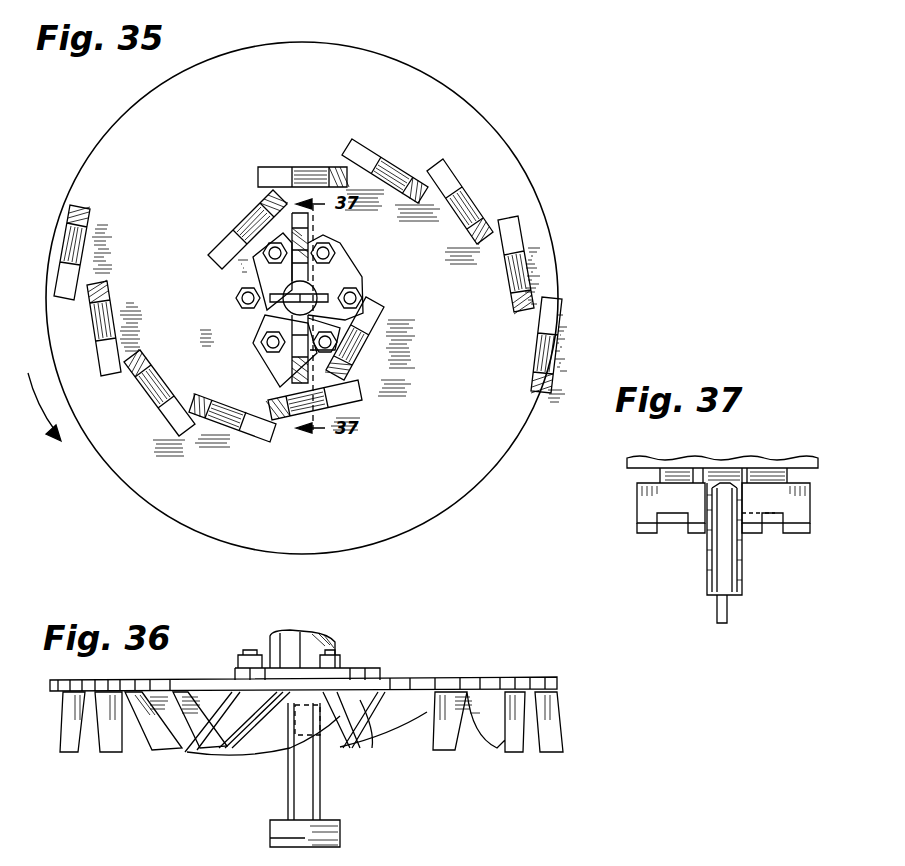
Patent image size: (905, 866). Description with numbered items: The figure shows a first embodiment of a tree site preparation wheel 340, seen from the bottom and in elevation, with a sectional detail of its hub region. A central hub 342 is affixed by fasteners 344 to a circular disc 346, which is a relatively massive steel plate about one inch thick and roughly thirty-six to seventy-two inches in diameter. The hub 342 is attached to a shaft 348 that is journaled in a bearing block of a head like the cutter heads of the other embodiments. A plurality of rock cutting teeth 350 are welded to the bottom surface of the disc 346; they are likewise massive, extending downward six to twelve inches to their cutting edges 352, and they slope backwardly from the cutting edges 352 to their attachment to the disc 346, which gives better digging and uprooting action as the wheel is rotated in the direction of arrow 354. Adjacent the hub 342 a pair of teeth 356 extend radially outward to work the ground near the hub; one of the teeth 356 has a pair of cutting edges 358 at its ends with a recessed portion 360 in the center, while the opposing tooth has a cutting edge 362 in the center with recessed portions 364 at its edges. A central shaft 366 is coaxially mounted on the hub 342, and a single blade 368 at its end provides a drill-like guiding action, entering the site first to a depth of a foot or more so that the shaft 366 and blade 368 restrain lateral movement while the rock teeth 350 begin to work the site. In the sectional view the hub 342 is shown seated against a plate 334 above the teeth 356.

In FIG. 37, the plate 334 is at (813, 458).
In FIG. 35, the site preparation wheel 340 is at (513, 112).
In FIG. 36, the site preparation wheel 340 is at (556, 686).
In FIG. 35, the central hub 342 is at (336, 272).
In FIG. 36, the central hub 342 is at (397, 687).
In FIG. 37, the central hub 342 is at (672, 472).
In FIG. 35, the fasteners 344 is at (262, 258).
In FIG. 36, the fasteners 344 is at (250, 655).
In FIG. 36, the circular disc 346 is at (500, 678).
In FIG. 36, the shaft 348 is at (330, 630).
In FIG. 35, the rock cutting teeth 350 is at (288, 166).
In FIG. 36, the rock cutting teeth 350 is at (68, 755).
In FIG. 36, the cutting edges 352 is at (445, 752).
In FIG. 35, the arrow (direction of rotation) 354 is at (45, 427).
In FIG. 35, the teeth 356 is at (316, 243).
In FIG. 36, the teeth 356 is at (295, 752).
In FIG. 37, the teeth 356 is at (657, 505).
In FIG. 37, the cutting edges 358 is at (642, 533).
In FIG. 37, the recessed portion 360 is at (665, 528).
In FIG. 37, the cutting edge 362 is at (778, 523).
In FIG. 37, the recessed portions 364 is at (800, 523).
In FIG. 35, the central shaft 366 is at (292, 312).
In FIG. 36, the central shaft 366 is at (290, 808).
In FIG. 37, the central shaft 366 is at (720, 583).
In FIG. 35, the blade 368 is at (286, 302).
In FIG. 36, the blade 368 is at (342, 836).
In FIG. 37, the blade 368 is at (727, 610).